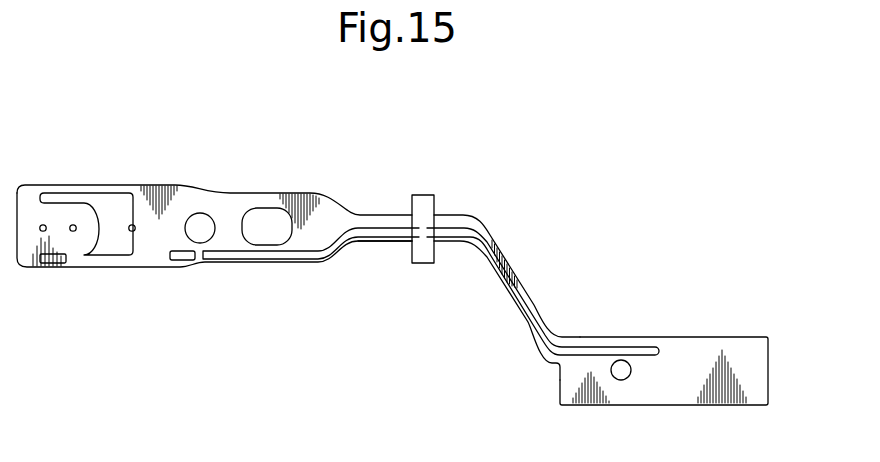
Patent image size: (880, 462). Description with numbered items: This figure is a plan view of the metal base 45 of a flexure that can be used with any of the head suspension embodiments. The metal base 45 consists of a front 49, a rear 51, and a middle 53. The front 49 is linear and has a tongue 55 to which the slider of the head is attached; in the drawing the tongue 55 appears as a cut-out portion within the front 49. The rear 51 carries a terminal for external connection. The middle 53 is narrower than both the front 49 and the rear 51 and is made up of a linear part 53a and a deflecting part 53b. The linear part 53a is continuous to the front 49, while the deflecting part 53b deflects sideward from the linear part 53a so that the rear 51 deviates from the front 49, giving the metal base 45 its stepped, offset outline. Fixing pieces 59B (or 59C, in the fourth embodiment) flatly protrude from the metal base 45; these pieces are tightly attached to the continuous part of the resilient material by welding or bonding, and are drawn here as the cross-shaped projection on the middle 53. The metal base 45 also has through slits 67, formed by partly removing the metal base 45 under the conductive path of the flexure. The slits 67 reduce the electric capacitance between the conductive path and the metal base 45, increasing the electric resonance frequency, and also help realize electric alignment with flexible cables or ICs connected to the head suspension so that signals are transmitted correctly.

The metal base 45 is at (392, 240).
The front 49 is at (90, 186).
The rear 51 is at (730, 337).
The middle 53 is at (455, 287).
The linear part 53a is at (372, 238).
The deflecting part 53b is at (506, 271).
The tongue 55 is at (63, 242).
The fixing pieces 59B is at (467, 190).
The fixing pieces 59C is at (424, 195).
The through slits 67 is at (280, 258).